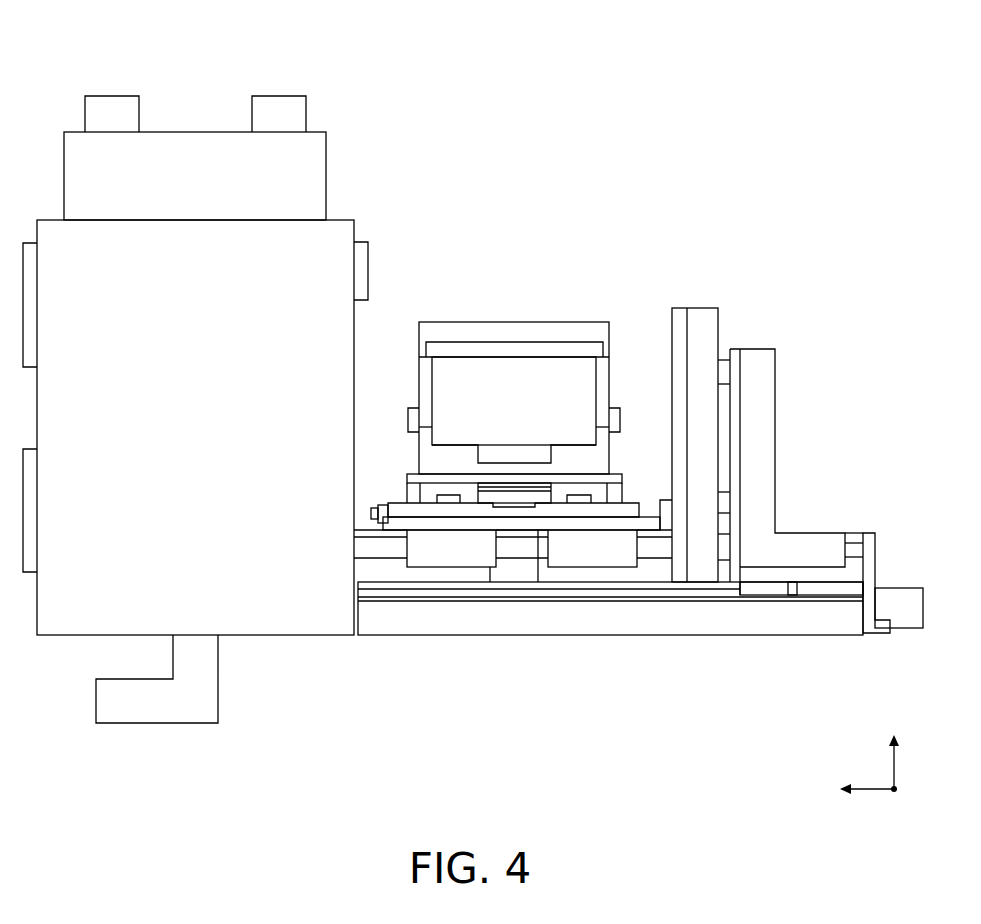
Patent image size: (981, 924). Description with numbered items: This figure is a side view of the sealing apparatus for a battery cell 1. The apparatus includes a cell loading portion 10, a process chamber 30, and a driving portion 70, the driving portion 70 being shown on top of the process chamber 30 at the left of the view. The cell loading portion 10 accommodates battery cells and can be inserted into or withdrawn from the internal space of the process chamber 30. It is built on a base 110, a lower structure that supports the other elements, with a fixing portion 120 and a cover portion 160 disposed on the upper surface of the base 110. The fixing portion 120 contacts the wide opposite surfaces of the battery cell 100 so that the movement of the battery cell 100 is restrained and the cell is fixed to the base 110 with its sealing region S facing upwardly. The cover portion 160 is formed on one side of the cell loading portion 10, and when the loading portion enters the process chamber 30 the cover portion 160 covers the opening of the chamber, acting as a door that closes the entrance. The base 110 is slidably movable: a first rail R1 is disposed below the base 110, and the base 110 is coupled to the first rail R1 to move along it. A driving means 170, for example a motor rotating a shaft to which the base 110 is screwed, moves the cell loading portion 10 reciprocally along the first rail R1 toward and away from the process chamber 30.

The sealing apparatus for a battery cell 1 is at (521, 45).
The cell loading portion 10 is at (633, 243).
The process chamber 30 is at (302, 607).
The driving portion 70 is at (322, 152).
The battery cell 100 is at (514, 356).
The sealing region S is at (558, 328).
The base 110 is at (606, 522).
The fixing portion 120 is at (531, 419).
The first rail R1 is at (653, 552).
The cover portion 160 is at (713, 317).
The driving means 170 is at (907, 593).